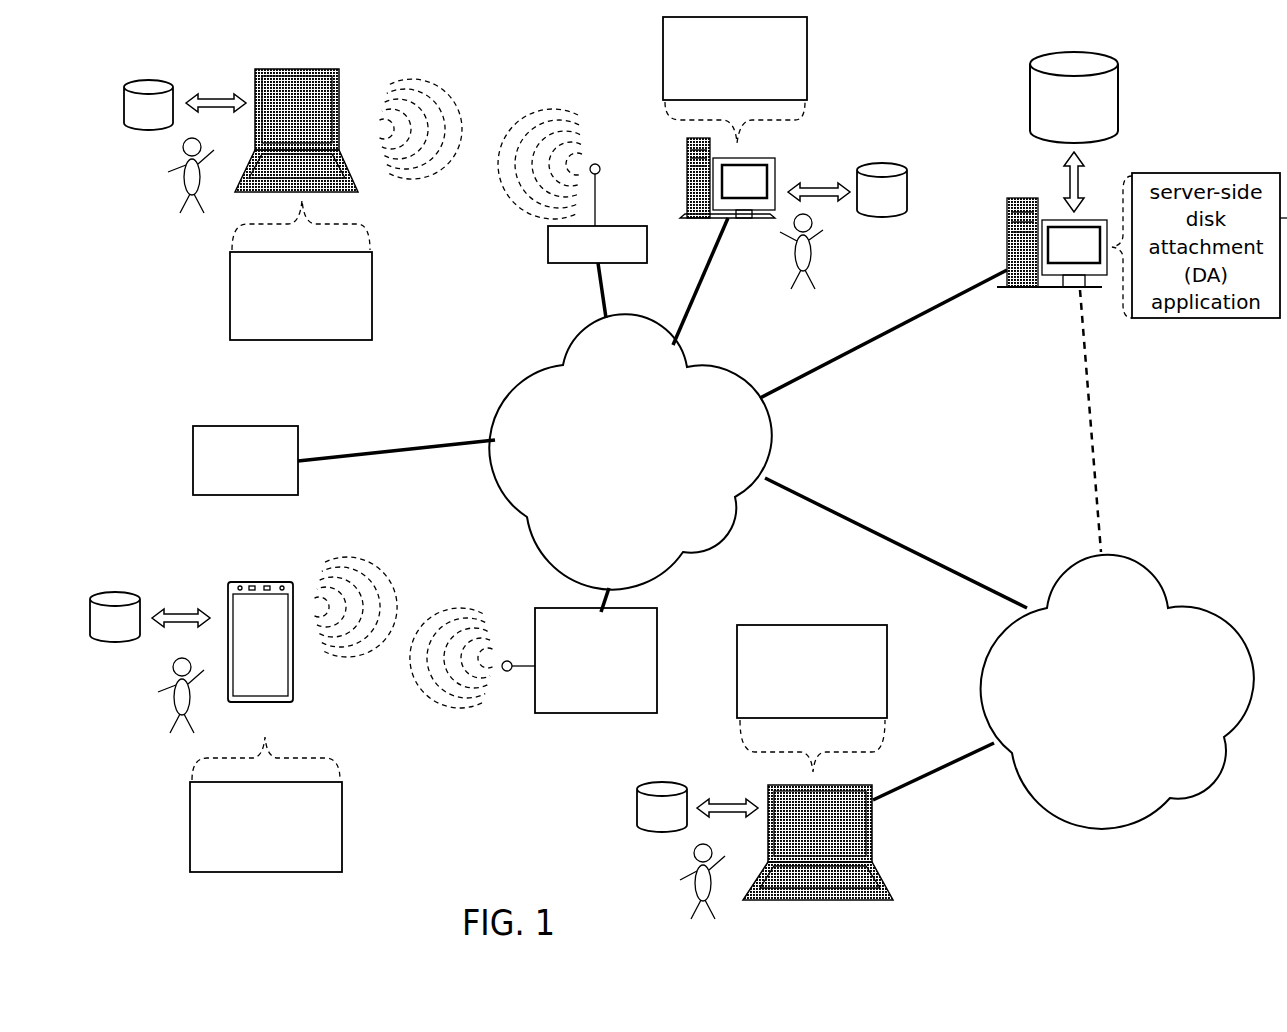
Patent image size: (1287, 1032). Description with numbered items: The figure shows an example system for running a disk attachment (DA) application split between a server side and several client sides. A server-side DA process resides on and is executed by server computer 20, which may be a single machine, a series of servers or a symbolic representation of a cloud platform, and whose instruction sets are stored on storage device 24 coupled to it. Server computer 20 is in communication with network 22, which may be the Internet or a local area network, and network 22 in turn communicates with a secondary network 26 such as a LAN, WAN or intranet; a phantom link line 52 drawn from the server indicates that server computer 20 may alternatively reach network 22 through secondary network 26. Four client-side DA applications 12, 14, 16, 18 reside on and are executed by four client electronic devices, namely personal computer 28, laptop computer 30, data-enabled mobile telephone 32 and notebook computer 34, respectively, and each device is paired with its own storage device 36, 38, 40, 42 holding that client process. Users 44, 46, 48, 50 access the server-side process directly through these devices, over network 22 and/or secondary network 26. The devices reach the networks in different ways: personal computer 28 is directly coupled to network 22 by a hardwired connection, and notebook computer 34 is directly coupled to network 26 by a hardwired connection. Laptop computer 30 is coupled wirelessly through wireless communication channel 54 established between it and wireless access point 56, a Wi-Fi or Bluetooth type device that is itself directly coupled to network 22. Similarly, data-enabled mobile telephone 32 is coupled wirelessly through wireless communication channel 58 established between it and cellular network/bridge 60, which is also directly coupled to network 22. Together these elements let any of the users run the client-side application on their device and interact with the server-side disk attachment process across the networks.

The client-side disk attachment application 12 is at (807, 80).
The client-side disk attachment application 14 is at (372, 280).
The client-side disk attachment application 16 is at (342, 800).
The client-side disk attachment application 18 is at (887, 688).
The server computer 20 is at (1007, 226).
The network 22 is at (630, 451).
The storage device 24 is at (1118, 70).
The secondary network 26 is at (1117, 692).
The personal computer 28 is at (775, 177).
The laptop computer 30 is at (333, 97).
The data-enabled mobile telephone 32 is at (293, 648).
The notebook computer 34 is at (872, 835).
The storage device 36 is at (882, 190).
The storage device 38 is at (148, 105).
The storage device 40 is at (115, 617).
The storage device 42 is at (662, 807).
The user 44 is at (823, 232).
The user 46 is at (155, 163).
The user 48 is at (155, 678).
The user 50 is at (665, 877).
The phantom link line 52 is at (1083, 404).
The wireless communication channel 54 is at (490, 113).
The wireless access point 56 is at (548, 243).
The wireless communication channel 58 is at (415, 608).
The cellular network/bridge 60 is at (658, 628).